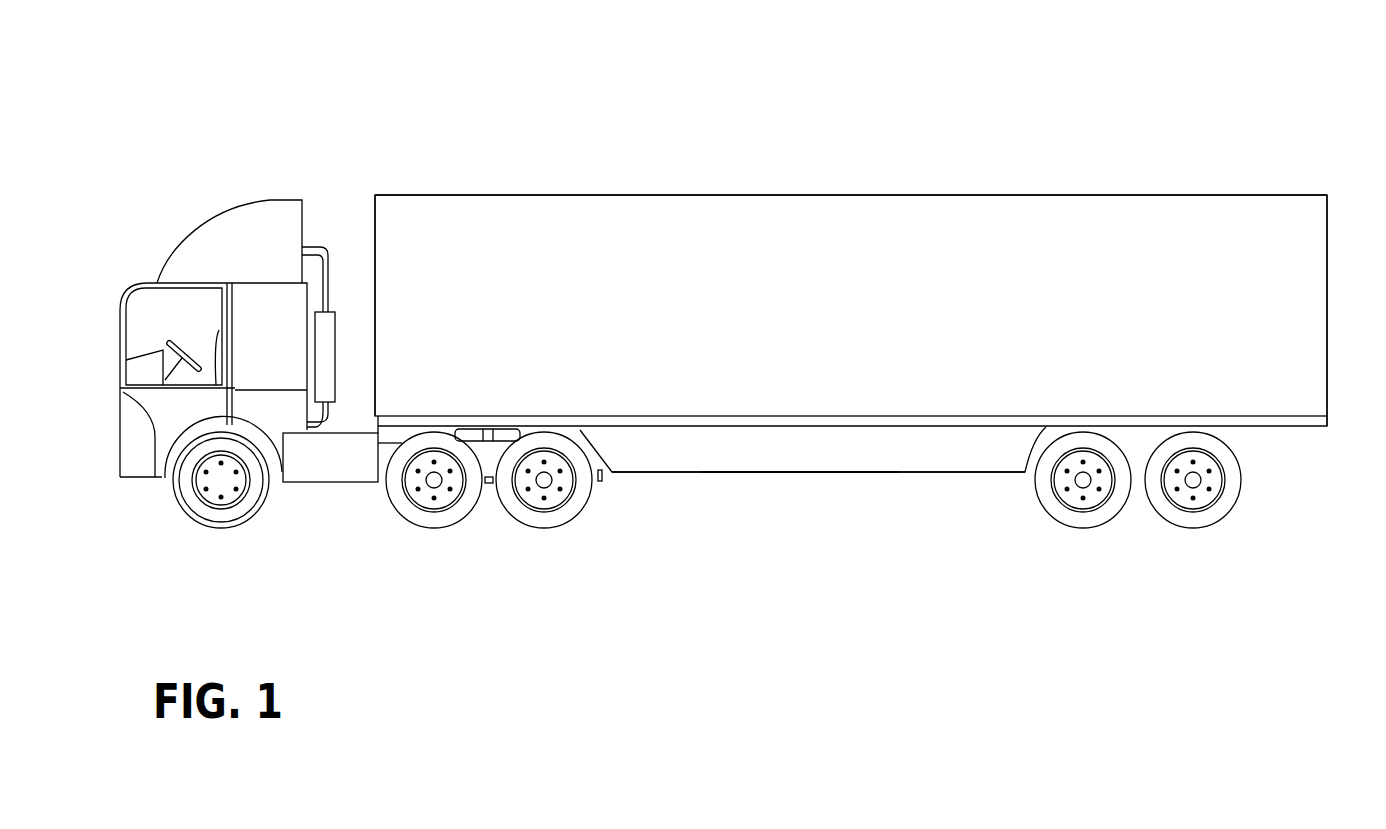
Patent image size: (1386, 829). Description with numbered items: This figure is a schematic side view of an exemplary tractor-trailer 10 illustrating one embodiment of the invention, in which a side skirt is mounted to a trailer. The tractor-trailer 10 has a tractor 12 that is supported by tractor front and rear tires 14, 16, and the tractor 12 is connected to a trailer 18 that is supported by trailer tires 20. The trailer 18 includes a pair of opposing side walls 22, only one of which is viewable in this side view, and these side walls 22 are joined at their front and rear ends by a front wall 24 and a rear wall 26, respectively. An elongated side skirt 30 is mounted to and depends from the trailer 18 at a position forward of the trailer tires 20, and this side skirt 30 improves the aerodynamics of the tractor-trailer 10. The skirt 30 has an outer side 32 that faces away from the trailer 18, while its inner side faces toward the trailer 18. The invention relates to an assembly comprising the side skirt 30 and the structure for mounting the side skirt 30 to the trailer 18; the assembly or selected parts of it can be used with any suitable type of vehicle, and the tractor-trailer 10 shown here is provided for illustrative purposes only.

The tractor-trailer 10 is at (556, 152).
The tractor 12 is at (199, 208).
The tractor front tires 14 is at (246, 511).
The tractor rear tires 16 is at (457, 512).
The trailer 18 is at (746, 186).
The trailer tires 20 is at (1105, 512).
The side walls 22 is at (866, 228).
The front wall 24 is at (373, 218).
The rear wall 26 is at (1328, 225).
The side skirt 30 is at (906, 484).
The outer side 32 is at (780, 455).